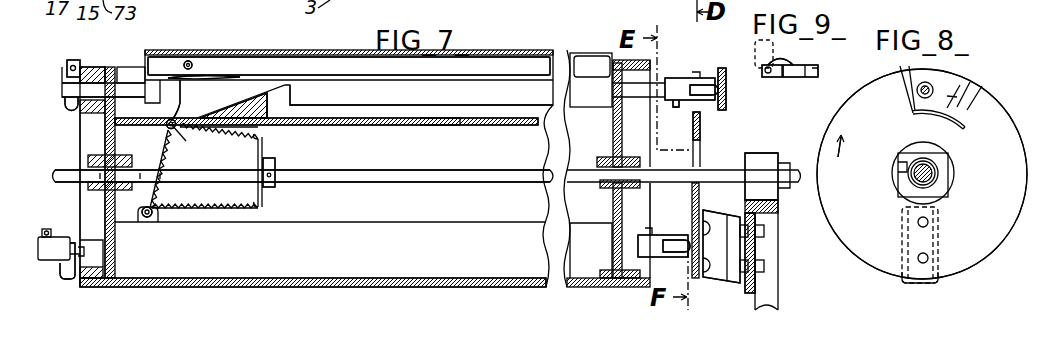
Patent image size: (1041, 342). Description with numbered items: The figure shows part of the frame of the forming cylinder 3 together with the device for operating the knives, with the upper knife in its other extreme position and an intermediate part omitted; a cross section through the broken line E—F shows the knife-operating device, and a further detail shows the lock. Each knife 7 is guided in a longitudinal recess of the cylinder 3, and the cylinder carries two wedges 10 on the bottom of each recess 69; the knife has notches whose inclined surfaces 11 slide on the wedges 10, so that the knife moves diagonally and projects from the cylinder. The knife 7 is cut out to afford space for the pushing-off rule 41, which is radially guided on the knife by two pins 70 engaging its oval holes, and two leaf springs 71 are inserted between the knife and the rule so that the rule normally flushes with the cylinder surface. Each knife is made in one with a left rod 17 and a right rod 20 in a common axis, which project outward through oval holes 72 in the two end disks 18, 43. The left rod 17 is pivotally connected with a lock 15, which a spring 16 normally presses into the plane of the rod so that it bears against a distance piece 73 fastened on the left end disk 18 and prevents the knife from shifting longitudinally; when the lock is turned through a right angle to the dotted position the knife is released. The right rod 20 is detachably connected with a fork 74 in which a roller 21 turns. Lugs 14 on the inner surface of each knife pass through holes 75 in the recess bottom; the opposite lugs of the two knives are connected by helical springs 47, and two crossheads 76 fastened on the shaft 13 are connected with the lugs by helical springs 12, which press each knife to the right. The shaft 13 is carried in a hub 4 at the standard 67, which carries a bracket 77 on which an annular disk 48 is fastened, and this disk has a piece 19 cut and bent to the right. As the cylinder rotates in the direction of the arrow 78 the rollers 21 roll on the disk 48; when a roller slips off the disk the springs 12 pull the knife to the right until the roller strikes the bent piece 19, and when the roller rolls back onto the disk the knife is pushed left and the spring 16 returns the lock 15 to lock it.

In FIG. 7, the forming cylinder 3 is at (368, 282).
In FIG. 7, the hub 4 is at (760, 172).
In FIG. 8, the hub 4 is at (945, 186).
In FIG. 7, the knife 7 is at (344, 58).
In FIG. 7, the wedge 10 is at (268, 125).
In FIG. 7, the inclined surface 11 is at (271, 84).
In FIG. 7, the helical spring 12 is at (214, 138).
In FIG. 7, the shaft 13 is at (432, 173).
In FIG. 8, the shaft 13 is at (906, 183).
In FIG. 7, the lug 14 is at (173, 129).
In FIG. 7, the lock 15 is at (79, 63).
In FIG. 9, the lock 15 is at (777, 77).
In FIG. 7, the spring 16 is at (70, 105).
In FIG. 9, the spring 16 is at (785, 62).
In FIG. 7, the left rod 17 is at (92, 98).
In FIG. 9, the left rod 17 is at (805, 77).
In FIG. 7, the left end disk 18 is at (80, 198).
In FIG. 7, the bent piece 19 is at (716, 111).
In FIG. 8, the bent piece 19 is at (962, 93).
In FIG. 7, the right rod 20 is at (652, 84).
In FIG. 8, the right rod 20 is at (915, 85).
In FIG. 7, the roller 21 is at (710, 84).
In FIG. 8, the roller 21 is at (906, 97).
In FIG. 7, the pushing-off rule 41 is at (517, 66).
In FIG. 7, the right end disk 43 is at (650, 197).
In FIG. 7, the helical spring 47 is at (160, 168).
In FIG. 7, the annular disk 48 is at (699, 130).
In FIG. 8, the annular disk 48 is at (1000, 210).
In FIG. 7, the standard 67 is at (755, 253).
In FIG. 7, the recess 69 is at (434, 127).
In FIG. 7, the pin 70 is at (189, 61).
In FIG. 7, the leaf spring 71 is at (206, 77).
In FIG. 7, the oval hole 72 is at (92, 92).
In FIG. 7, the distance piece 73 is at (100, 78).
In FIG. 7, the fork 74 is at (680, 98).
In FIG. 7, the hole 75 is at (156, 100).
In FIG. 7, the crosshead 76 is at (265, 190).
In FIG. 7, the bracket 77 is at (722, 262).
In FIG. 8, the bracket 77 is at (905, 277).
In FIG. 8, the arrow 78 is at (852, 149).